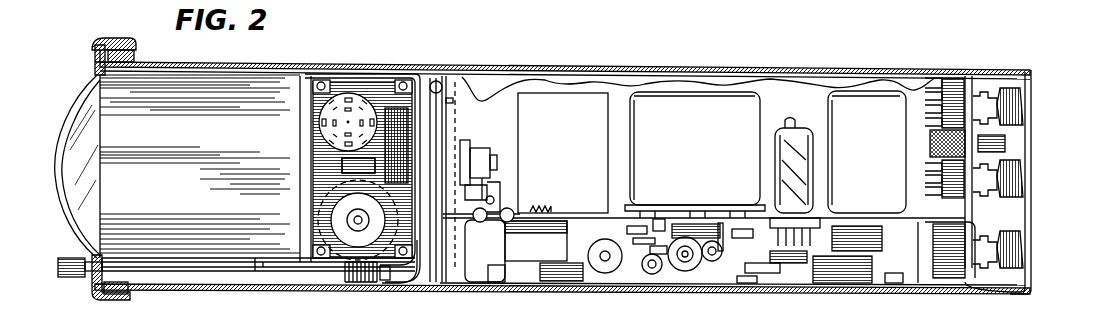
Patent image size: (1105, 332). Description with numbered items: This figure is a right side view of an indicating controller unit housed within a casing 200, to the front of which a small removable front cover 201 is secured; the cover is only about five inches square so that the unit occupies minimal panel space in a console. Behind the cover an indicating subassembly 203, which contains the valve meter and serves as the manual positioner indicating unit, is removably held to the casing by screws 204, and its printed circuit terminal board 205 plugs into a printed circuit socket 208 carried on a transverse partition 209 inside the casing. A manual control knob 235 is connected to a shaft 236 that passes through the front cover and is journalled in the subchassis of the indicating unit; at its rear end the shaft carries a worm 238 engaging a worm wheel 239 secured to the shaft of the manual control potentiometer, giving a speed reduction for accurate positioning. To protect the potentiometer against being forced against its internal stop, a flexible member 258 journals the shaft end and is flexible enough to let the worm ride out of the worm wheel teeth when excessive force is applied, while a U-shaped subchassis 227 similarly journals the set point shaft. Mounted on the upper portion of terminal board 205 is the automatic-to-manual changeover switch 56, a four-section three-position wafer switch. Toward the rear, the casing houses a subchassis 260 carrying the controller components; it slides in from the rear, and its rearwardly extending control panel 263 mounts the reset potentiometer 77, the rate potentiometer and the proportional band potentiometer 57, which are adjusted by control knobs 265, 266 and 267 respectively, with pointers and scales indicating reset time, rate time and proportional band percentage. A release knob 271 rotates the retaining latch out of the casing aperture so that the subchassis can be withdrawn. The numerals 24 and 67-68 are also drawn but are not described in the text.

The battery pack 24 is at (696, 120).
The automatic-to-manual changeover switch 56 is at (352, 94).
The proportional band potentiometer 57 is at (953, 276).
The flash tube 67-68 is at (795, 172).
The reset potentiometer 77 is at (950, 80).
The casing 200 is at (543, 72).
The front cover 201 is at (96, 60).
The indicating subassembly 203 is at (62, 122).
The screws 204 is at (97, 50).
The printed circuit terminal board 205 is at (419, 78).
The printed circuit socket 208 is at (436, 80).
The transverse partition 209 is at (449, 128).
The U-shaped subchassis 227 is at (268, 76).
The manual control knob 235 is at (74, 263).
The shaft 236 is at (205, 272).
The worm 238 is at (356, 284).
The worm wheel 239 is at (384, 281).
The flexible member 258 is at (413, 284).
The subchassis 260 is at (620, 228).
The control panel 263 is at (969, 84).
The control knob 265 is at (1016, 112).
The control knob 266 is at (1022, 178).
The control knob 267 is at (1020, 258).
The release knob 271 is at (1006, 145).